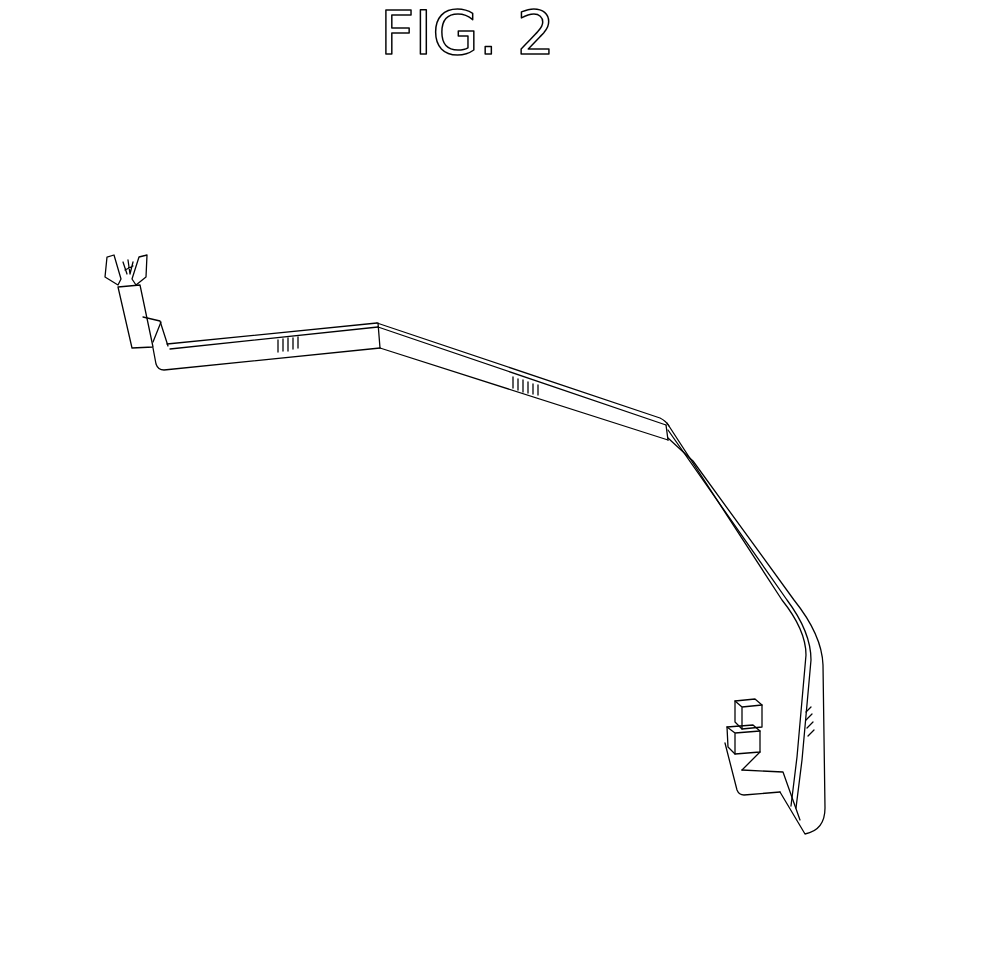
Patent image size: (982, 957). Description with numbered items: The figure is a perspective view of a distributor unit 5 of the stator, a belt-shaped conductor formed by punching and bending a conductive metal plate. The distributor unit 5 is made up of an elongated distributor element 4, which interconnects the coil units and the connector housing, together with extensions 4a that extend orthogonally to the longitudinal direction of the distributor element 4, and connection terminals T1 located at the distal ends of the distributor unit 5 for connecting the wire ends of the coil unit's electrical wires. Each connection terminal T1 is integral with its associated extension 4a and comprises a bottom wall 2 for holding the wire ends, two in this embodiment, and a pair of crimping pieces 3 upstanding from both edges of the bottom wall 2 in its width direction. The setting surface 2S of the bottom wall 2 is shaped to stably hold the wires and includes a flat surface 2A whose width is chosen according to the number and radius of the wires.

The distributor unit 5 is at (681, 156).
The distributor element 4 is at (572, 392).
The extension 4a is at (171, 338).
The bottom wall 2 is at (128, 262).
The flat surface 2A is at (115, 259).
The setting surface 2S is at (141, 256).
The crimping piece 3 is at (147, 282).
The connection terminal T1 is at (162, 262).